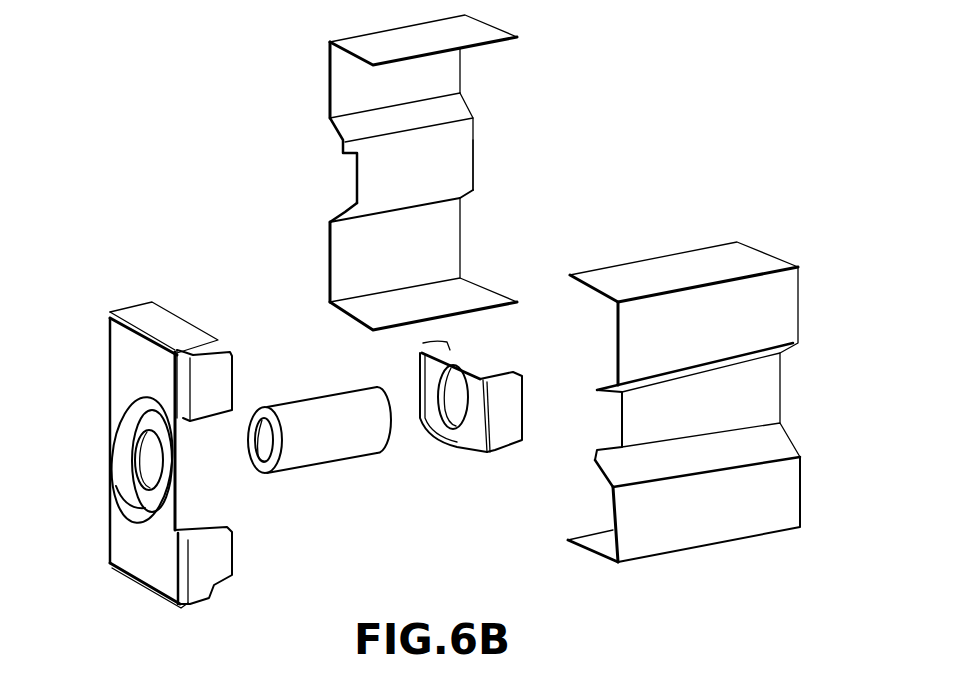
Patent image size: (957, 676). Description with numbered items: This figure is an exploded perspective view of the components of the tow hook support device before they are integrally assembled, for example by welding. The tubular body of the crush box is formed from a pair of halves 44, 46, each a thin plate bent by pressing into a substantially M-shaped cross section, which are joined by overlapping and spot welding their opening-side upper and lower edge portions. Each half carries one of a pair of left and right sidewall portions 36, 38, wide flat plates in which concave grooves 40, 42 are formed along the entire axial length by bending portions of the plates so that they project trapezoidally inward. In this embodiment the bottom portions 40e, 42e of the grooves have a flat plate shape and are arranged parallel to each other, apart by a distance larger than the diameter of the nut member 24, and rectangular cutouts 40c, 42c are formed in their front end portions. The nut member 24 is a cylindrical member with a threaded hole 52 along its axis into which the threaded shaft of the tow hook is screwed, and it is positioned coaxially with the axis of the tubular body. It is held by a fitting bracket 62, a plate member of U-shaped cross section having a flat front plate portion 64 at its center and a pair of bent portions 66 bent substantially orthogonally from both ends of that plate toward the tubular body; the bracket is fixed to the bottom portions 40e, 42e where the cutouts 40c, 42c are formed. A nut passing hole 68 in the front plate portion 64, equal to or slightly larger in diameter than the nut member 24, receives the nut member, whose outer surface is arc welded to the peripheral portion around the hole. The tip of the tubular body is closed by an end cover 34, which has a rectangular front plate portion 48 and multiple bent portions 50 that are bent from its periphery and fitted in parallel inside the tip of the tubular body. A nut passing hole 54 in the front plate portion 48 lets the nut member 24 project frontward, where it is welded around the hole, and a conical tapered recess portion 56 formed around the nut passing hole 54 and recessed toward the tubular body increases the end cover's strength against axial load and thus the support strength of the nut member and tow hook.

The nut member 24 is at (315, 417).
The end cover 34 is at (164, 433).
The sidewall portion 36 is at (743, 523).
The sidewall portion 38 is at (328, 93).
The concave groove 40 is at (773, 450).
The cutout 40c is at (619, 412).
The bottom portion 40e is at (755, 400).
The concave groove 42 is at (397, 158).
The cutout 42c is at (352, 207).
The bottom portion 42e is at (469, 152).
The half 44 is at (703, 381).
The half 46 is at (422, 169).
The front plate portion 48 is at (143, 560).
The bent portions 50 is at (170, 325).
The threaded hole 52 is at (262, 465).
The nut passing hole 54 is at (147, 442).
The tapered recess portion 56 is at (135, 487).
The fitting bracket 62 is at (446, 424).
The front plate portion 64 is at (427, 372).
The bent portions 66 is at (512, 430).
The nut passing hole 68 is at (453, 430).